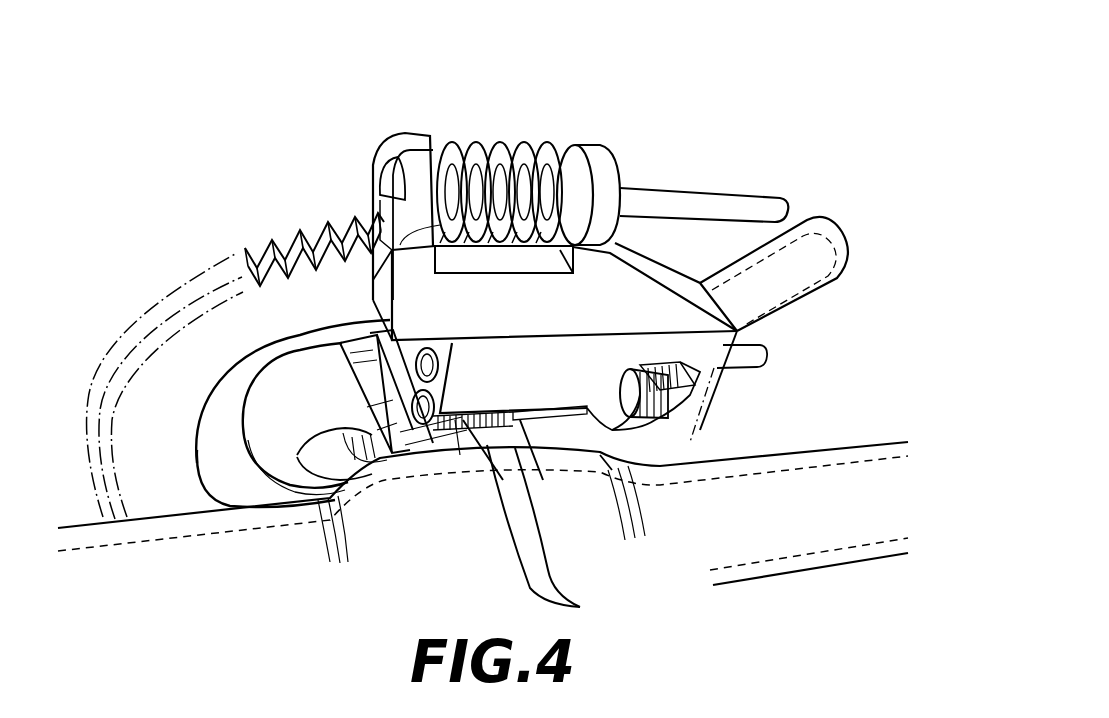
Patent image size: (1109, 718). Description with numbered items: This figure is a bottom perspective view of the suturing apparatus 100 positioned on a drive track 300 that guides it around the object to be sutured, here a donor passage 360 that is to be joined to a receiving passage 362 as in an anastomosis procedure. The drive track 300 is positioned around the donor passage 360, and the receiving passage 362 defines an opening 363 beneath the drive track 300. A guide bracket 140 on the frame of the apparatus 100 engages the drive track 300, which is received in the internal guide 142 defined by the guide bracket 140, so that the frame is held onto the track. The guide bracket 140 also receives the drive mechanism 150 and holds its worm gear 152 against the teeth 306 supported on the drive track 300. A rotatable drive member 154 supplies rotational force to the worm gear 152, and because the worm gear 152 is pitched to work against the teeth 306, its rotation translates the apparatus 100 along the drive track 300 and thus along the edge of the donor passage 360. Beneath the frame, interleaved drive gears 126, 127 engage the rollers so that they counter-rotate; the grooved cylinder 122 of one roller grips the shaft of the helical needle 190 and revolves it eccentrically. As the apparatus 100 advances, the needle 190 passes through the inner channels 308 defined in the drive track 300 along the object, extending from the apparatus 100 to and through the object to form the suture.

The apparatus 100 is at (383, 58).
The drive mechanism 150 is at (343, 108).
The internal guide 142 is at (352, 192).
The teeth 306 is at (290, 240).
The drive track 300 is at (138, 278).
The worm gear 152 is at (480, 148).
The guide bracket 140 is at (590, 150).
The rotatable drive member 154 is at (690, 192).
The donor passage 360 is at (850, 228).
The receiving passage 362 is at (870, 425).
The drive gear 127 is at (680, 398).
The drive gear 126 is at (640, 432).
The opening 363 is at (378, 462).
The needle 190 is at (467, 470).
The cylinder 122 is at (622, 470).
The inner channels 308 is at (575, 604).